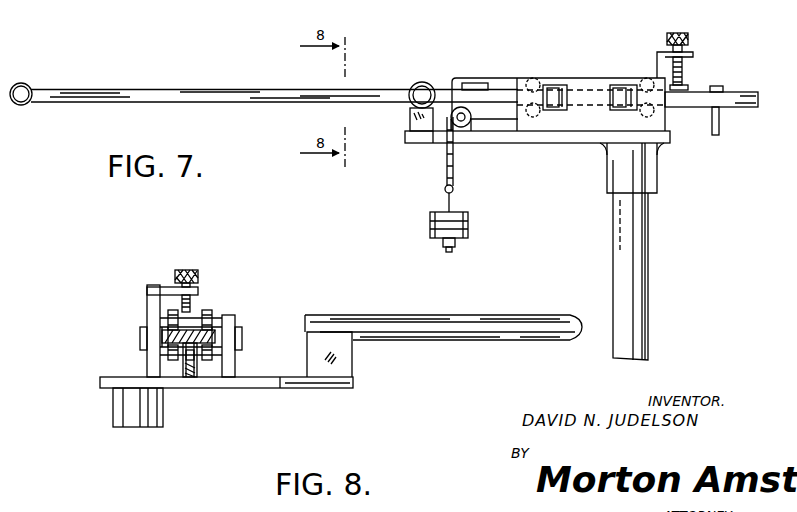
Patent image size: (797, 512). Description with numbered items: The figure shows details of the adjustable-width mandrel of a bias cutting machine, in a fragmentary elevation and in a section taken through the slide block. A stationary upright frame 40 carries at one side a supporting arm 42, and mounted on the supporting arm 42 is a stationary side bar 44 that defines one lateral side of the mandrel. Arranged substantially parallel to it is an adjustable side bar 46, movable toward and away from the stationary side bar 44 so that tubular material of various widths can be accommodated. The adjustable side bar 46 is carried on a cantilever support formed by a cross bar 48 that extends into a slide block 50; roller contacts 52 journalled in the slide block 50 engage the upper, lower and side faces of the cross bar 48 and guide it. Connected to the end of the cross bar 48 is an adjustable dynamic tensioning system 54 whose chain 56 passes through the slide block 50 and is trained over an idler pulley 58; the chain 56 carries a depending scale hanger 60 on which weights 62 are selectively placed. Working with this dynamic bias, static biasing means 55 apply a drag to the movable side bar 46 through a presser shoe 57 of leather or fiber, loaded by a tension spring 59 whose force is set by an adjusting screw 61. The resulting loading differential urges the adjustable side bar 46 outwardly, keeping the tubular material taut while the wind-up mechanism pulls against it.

In FIG. 7, the upright frame 40 is at (643, 258).
In FIG. 8, the upright frame 40 is at (130, 425).
In FIG. 7, the supporting arm 42 is at (546, 141).
In FIG. 8, the supporting arm 42 is at (355, 385).
In FIG. 7, the stationary side bar 44 is at (421, 82).
In FIG. 8, the stationary side bar 44 is at (457, 338).
In FIG. 7, the adjustable side bar 46 is at (31, 86).
In FIG. 7, the cross bar 48 is at (241, 93).
In FIG. 8, the cross bar 48 is at (185, 340).
In FIG. 7, the slide block 50 is at (590, 83).
In FIG. 8, the slide block 50 is at (237, 317).
In FIG. 7, the roller contacts 52 is at (553, 88).
In FIG. 8, the roller contacts 52 is at (140, 338).
In FIG. 7, the adjustable dynamic tensioning system 54 is at (432, 181).
In FIG. 7, the static biasing means 55 is at (690, 71).
In FIG. 8, the static biasing means 55 is at (198, 283).
In FIG. 7, the chain 56 is at (453, 172).
In FIG. 8, the chain 56 is at (191, 374).
In FIG. 7, the presser shoe 57 is at (689, 88).
In FIG. 7, the idler pulley 58 is at (466, 124).
In FIG. 8, the idler pulley 58 is at (190, 378).
In FIG. 7, the tension spring 59 is at (663, 73).
In FIG. 7, the scale hanger 60 is at (455, 244).
In FIG. 7, the adjusting screw 61 is at (687, 34).
In FIG. 8, the adjusting screw 61 is at (190, 270).
In FIG. 7, the weights 62 is at (468, 235).